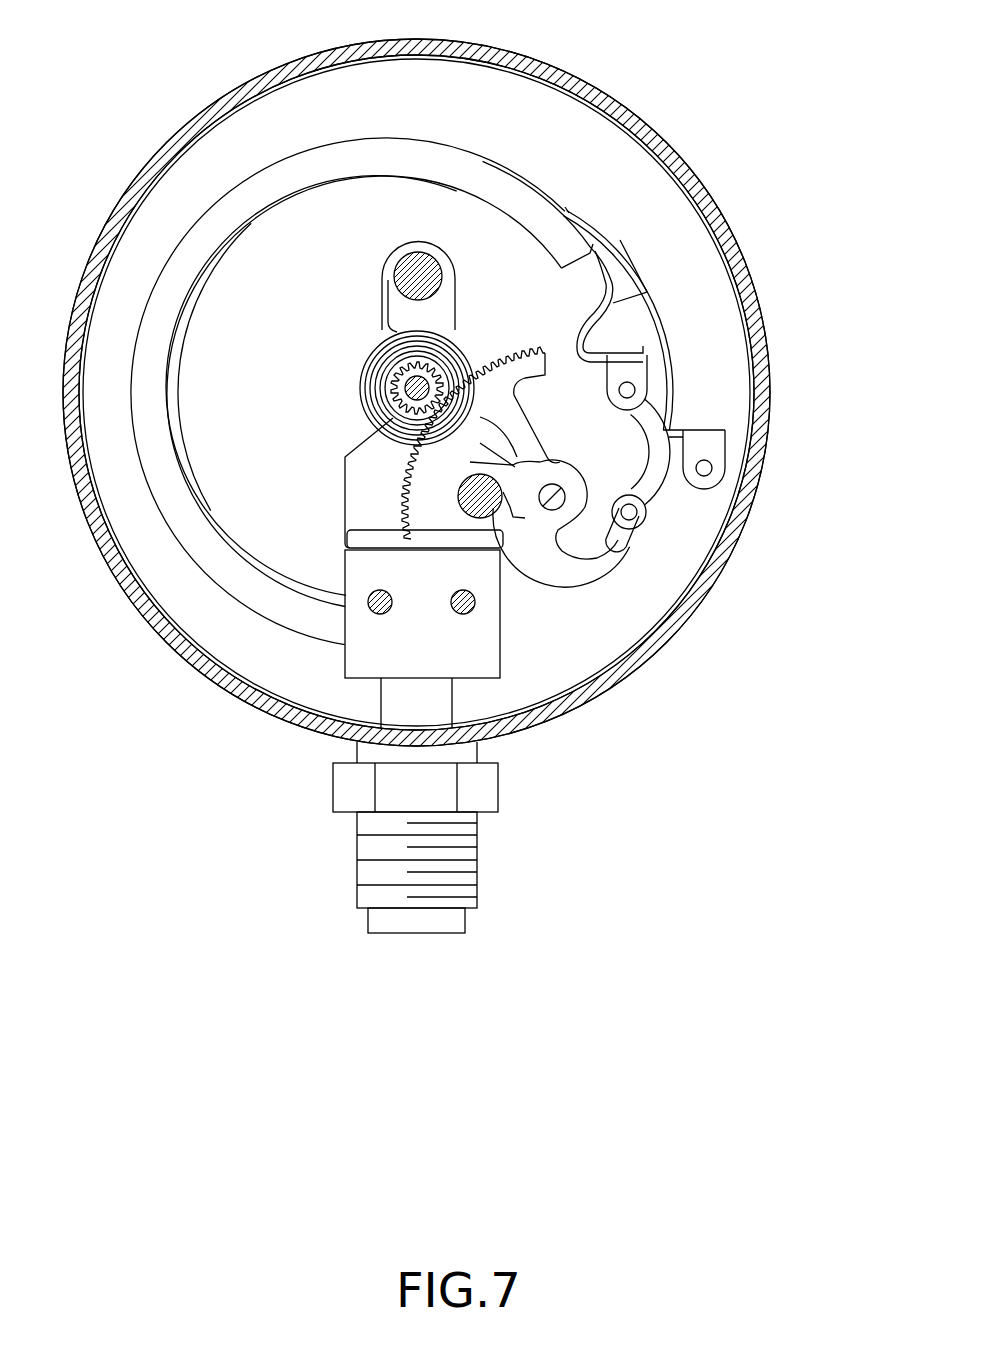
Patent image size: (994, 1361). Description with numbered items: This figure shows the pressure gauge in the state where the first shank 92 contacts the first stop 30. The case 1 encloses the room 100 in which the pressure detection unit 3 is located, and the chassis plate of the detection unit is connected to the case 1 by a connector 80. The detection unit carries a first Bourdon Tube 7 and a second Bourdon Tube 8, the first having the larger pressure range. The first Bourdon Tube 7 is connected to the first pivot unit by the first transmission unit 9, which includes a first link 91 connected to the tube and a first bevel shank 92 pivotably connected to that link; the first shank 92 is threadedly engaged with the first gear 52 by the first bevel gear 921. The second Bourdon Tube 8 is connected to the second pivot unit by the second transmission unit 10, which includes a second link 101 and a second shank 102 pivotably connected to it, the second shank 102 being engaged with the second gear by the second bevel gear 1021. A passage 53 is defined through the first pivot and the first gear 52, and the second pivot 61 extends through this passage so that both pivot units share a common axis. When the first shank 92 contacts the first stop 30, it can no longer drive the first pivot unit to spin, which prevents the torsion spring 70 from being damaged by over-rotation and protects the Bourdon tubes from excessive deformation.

The room 100 is at (266, 106).
The case 1 is at (656, 84).
The first Bourdon Tube 7 is at (388, 148).
The pressure detection unit 3 is at (676, 246).
The passage 53 is at (440, 372).
The second bevel gear 1021 is at (505, 362).
The first gear 52 is at (380, 372).
The second Bourdon Tube 8 is at (214, 418).
The second pivot 61 is at (402, 391).
The torsion spring 70 is at (365, 408).
The second shank 102 is at (527, 430).
The second transmission unit 10 is at (840, 352).
The second link 101 is at (697, 505).
The first bevel gear 921 is at (345, 503).
The first stop 30 is at (457, 530).
The first link 91 is at (653, 492).
The first bevel shank 92 is at (587, 565).
The first transmission unit 9 is at (702, 680).
The connector 80 is at (357, 845).